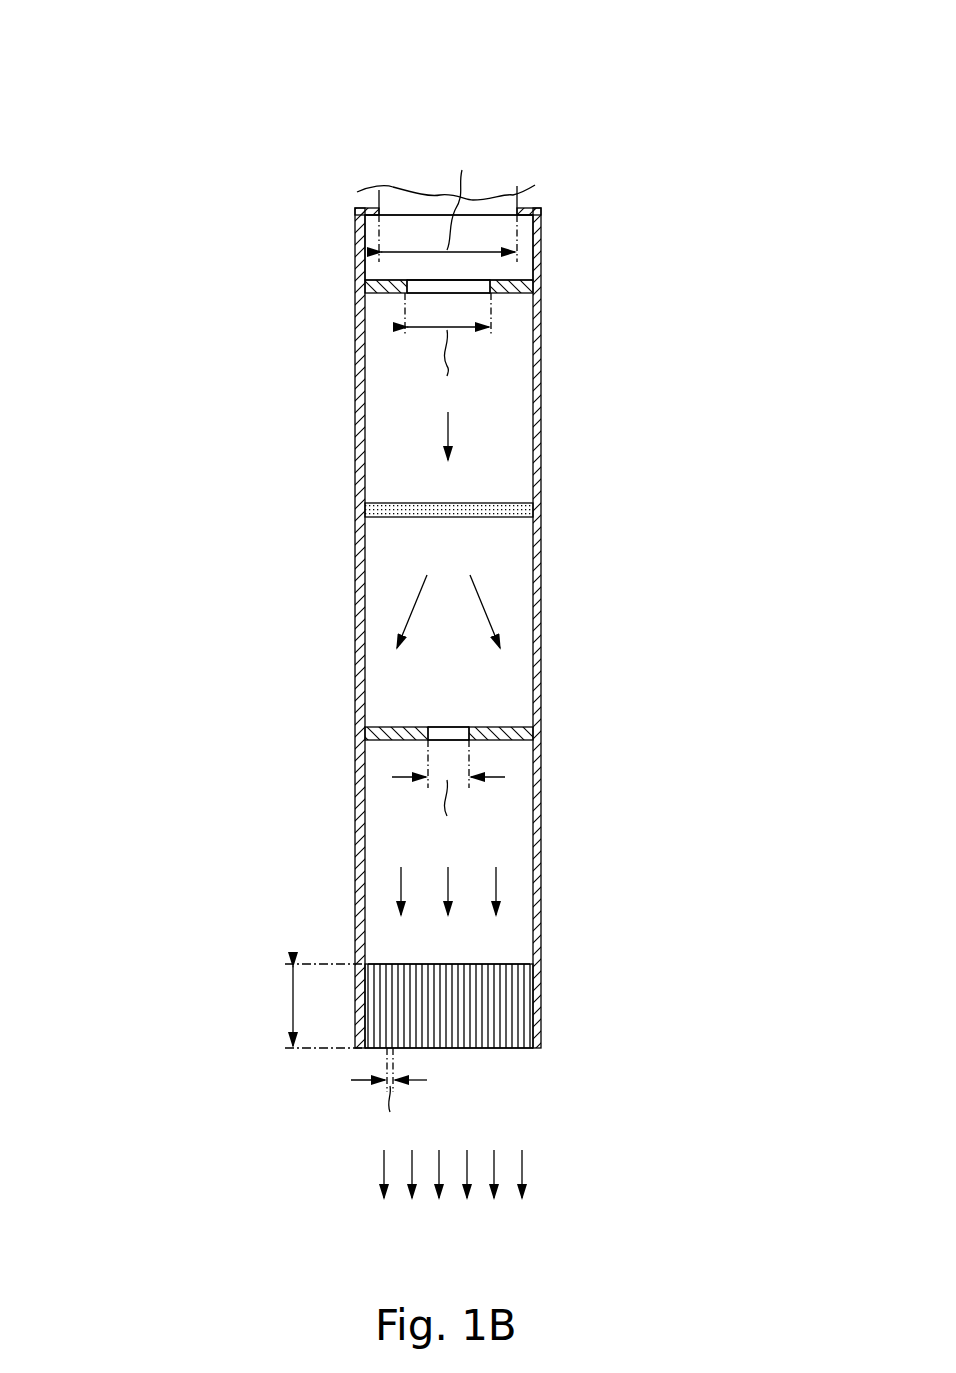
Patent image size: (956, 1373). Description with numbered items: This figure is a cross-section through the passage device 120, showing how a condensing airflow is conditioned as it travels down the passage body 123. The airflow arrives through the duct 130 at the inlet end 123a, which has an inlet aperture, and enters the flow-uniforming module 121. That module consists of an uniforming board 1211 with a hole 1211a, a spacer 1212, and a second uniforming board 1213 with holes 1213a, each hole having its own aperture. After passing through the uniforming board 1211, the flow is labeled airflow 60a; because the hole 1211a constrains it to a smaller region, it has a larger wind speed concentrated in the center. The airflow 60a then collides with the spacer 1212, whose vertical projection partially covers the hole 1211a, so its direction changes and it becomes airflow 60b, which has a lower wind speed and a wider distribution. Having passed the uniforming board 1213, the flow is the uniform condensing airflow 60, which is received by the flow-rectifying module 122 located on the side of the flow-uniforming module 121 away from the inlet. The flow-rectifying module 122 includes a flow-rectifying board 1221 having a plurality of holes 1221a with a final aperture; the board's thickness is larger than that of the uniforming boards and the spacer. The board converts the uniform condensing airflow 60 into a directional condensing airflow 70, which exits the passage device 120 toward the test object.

The passage device 120 is at (98, 4).
The flow-uniforming module 121 is at (632, 273).
The flow-rectifying module 122 is at (450, 982).
The passage body 123 is at (537, 826).
The inlet end 123a is at (411, 216).
The duct 130 is at (535, 185).
The uniforming board 1211 is at (527, 286).
The hole 1211a is at (418, 276).
The spacer 1212 is at (522, 510).
The uniforming board 1213 is at (527, 734).
The holes 1213a is at (438, 725).
The flow-rectifying board 1221 is at (527, 962).
The holes 1221a is at (396, 963).
The uniform condensing airflow 60 is at (400, 880).
The airflow 60a is at (447, 433).
The airflow 60b is at (425, 600).
The directional condensing airflow 70 is at (523, 1163).